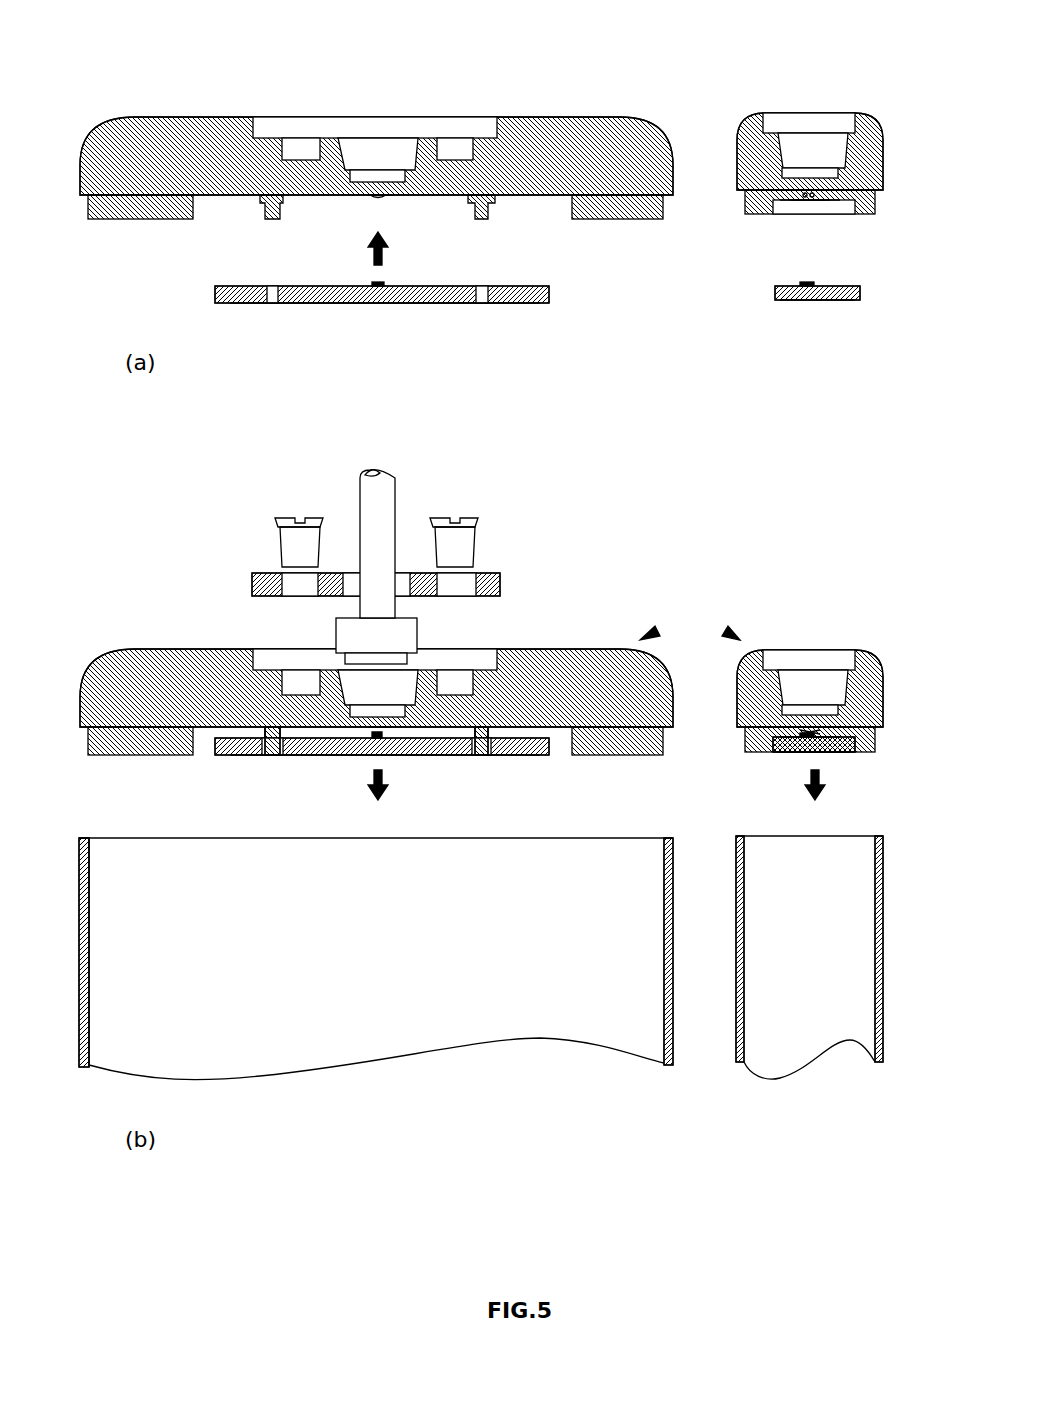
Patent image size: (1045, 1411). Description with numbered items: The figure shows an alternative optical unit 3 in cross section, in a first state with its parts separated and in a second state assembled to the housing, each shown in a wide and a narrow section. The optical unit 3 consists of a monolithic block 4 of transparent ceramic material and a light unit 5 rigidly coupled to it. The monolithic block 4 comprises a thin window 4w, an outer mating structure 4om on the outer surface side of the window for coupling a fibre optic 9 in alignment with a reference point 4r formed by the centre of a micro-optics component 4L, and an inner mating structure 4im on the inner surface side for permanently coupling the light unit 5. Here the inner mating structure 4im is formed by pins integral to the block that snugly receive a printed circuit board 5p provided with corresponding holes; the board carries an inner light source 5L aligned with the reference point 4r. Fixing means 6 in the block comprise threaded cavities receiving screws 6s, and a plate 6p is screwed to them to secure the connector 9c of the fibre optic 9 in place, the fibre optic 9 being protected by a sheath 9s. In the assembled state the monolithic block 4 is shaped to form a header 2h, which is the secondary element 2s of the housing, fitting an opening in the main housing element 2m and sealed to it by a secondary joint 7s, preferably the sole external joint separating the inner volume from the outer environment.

The secondary element 2s is at (650, 633).
The header 2h is at (731, 633).
The optical unit 3 is at (740, 640).
The main housing element 2m is at (673, 880).
The monolithic block 4 is at (570, 117).
The outer mating structure 4om is at (400, 152).
The inner mating structure 4im is at (272, 220).
The thin window 4w is at (398, 198).
The reference point 4r is at (376, 198).
The micro-optics component 4L is at (598, 461).
The light unit 5 is at (288, 310).
The inner light source 5L is at (382, 282).
The printed circuit board 5p is at (455, 304).
The fixing means 6 is at (302, 138).
The screw 6s is at (478, 528).
The plate 6p is at (500, 585).
The secondary joint 7s is at (95, 848).
The fibre optic 9 is at (398, 490).
The sheath 9s is at (372, 473).
The connector 9c is at (336, 640).